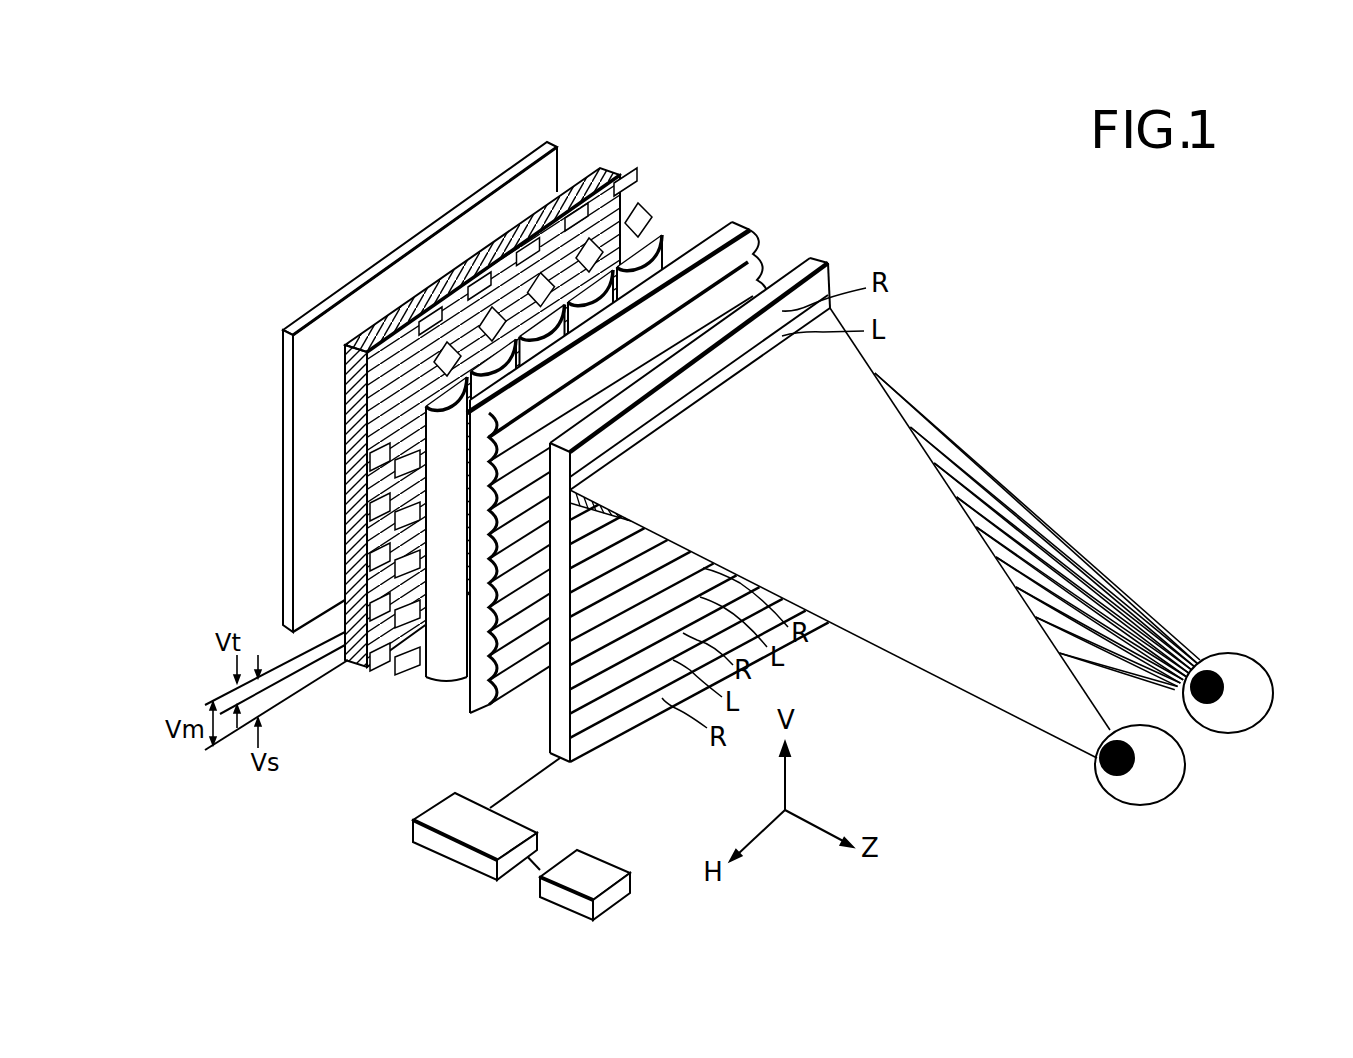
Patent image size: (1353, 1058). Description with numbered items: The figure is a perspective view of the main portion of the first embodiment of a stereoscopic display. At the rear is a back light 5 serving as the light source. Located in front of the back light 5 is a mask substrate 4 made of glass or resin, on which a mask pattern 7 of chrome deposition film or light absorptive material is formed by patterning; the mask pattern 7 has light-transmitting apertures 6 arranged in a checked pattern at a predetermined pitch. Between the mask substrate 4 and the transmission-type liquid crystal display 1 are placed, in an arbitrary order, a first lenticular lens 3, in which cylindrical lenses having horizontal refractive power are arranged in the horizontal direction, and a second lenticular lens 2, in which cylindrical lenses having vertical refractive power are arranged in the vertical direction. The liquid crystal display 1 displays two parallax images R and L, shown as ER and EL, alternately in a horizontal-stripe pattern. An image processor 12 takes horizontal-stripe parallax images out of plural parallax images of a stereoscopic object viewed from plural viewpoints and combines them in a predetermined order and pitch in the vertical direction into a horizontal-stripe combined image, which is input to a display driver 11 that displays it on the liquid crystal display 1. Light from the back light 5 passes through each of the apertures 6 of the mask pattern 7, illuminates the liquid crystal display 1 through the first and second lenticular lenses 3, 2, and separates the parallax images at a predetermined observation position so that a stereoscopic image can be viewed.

The transmission-type liquid crystal display 1 is at (815, 258).
The second lenticular lens 2 is at (753, 233).
The first lenticular lens 3 is at (660, 242).
The mask substrate 4 is at (598, 168).
The back light 5 is at (504, 172).
The light-transmitting apertures 6 is at (583, 210).
The mask pattern 7 is at (620, 205).
The display driver 11 is at (462, 830).
The image processor 12 is at (578, 883).
The parallax image R ER is at (1247, 696).
The parallax image L EL is at (1157, 772).